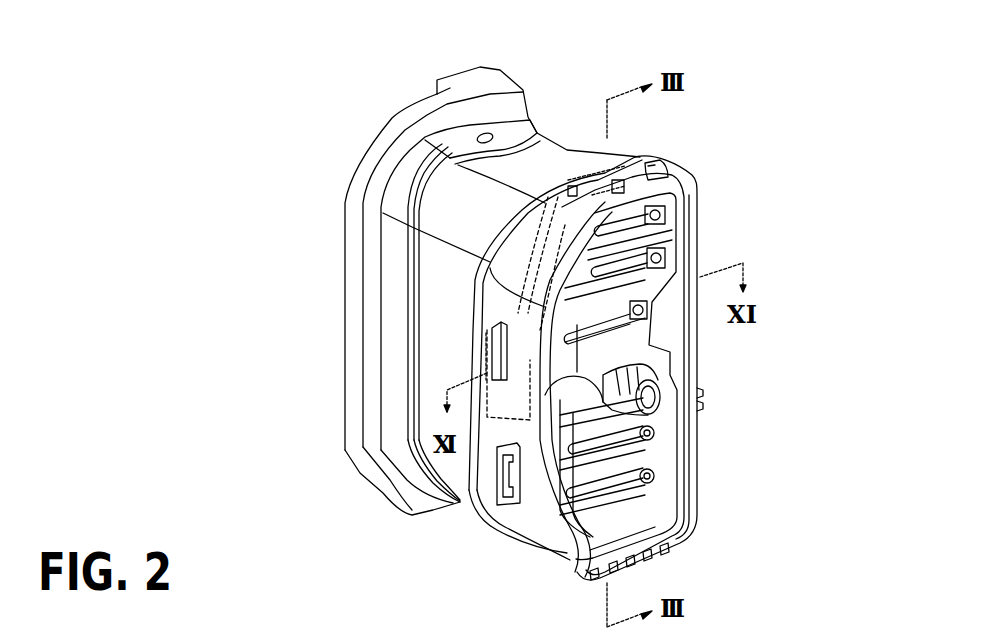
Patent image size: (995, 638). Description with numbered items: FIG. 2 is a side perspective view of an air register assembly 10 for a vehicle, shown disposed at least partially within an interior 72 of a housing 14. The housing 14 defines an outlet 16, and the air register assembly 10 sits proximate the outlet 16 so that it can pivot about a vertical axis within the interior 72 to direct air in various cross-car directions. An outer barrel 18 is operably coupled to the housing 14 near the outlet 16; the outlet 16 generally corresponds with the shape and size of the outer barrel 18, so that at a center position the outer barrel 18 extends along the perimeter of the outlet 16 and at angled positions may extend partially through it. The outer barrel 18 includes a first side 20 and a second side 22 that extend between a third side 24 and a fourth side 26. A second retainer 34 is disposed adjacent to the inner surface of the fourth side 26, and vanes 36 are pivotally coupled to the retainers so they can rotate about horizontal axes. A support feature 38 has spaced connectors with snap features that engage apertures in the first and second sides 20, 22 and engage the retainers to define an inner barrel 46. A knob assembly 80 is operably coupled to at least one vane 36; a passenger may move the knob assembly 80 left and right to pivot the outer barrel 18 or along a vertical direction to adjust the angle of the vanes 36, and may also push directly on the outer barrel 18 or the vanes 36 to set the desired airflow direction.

The air register assembly 10 is at (738, 180).
The housing 14 is at (497, 77).
The outlet 16 is at (577, 540).
The outer barrel 18 is at (678, 184).
The first side 20 is at (665, 166).
The second side 22 is at (667, 553).
The third side 24 is at (588, 415).
The fourth side 26 is at (680, 393).
The second retainer 34 is at (682, 252).
The vanes 36 is at (668, 218).
The support feature 38 is at (518, 307).
The inner barrel 46 is at (677, 495).
The interior 72 is at (477, 207).
The knob assembly 80 is at (650, 392).